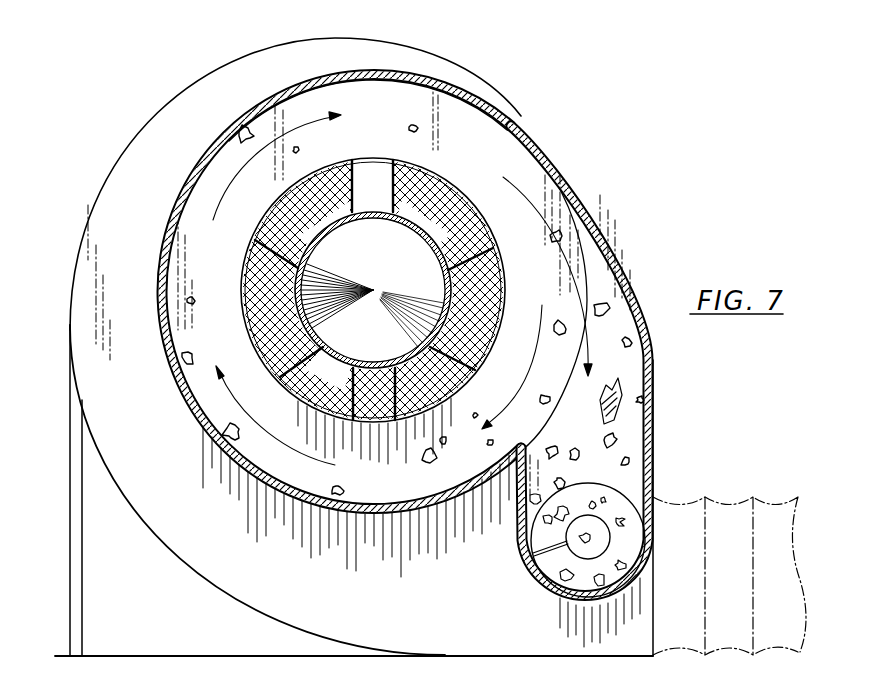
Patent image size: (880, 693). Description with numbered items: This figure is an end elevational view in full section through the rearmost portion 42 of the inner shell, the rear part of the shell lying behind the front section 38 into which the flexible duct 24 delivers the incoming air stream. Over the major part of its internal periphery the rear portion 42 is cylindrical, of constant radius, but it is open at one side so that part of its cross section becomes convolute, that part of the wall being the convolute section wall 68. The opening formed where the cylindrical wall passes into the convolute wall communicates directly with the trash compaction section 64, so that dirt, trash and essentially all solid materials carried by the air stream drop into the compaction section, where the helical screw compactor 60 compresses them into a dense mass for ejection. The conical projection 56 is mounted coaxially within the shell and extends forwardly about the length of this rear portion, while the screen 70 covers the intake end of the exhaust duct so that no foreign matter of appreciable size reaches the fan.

The flexible duct 24 is at (727, 513).
The section 38 is at (223, 63).
The rear portion 42 is at (417, 70).
The conical projection 56 is at (305, 330).
The helical screw compactor 60 is at (540, 580).
The trash compaction section 64 is at (517, 522).
The convolute section wall 68 is at (613, 228).
The screen 70 is at (280, 280).